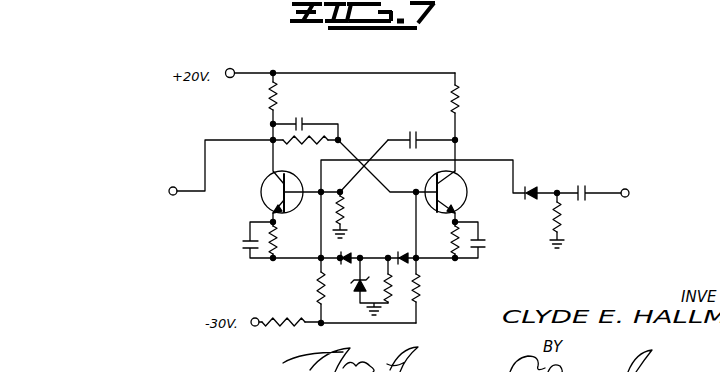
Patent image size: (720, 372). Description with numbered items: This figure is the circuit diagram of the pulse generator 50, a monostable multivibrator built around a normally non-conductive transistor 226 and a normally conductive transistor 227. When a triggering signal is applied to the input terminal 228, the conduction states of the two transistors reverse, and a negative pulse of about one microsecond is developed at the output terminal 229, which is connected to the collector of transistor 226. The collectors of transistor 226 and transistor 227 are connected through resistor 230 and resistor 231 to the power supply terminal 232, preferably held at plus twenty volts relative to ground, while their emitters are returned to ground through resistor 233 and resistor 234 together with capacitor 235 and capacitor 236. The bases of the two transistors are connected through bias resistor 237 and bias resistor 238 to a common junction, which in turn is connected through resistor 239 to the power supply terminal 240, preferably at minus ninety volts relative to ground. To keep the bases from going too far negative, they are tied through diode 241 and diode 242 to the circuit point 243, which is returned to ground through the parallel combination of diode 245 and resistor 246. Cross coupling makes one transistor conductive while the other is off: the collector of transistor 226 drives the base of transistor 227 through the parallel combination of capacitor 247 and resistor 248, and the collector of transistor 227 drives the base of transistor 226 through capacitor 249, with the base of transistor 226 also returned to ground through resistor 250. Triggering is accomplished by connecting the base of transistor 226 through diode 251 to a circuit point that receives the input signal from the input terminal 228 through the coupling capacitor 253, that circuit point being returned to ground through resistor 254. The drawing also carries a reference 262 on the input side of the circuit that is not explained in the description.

The pulse generator 50 is at (492, 128).
The normally non-conductive transistor 226 is at (261, 198).
The normally conductive transistor 227 is at (468, 191).
The input terminal 228 is at (630, 194).
The output terminal 229 is at (173, 186).
The resistor 230 is at (279, 96).
The resistor 231 is at (461, 104).
The power supply terminal 232 is at (236, 69).
The resistor 233 is at (278, 244).
The resistor 234 is at (452, 238).
The capacitor 235 is at (247, 240).
The capacitor 236 is at (483, 242).
The bias resistor 237 is at (318, 292).
The bias resistor 238 is at (421, 294).
The resistor 239 is at (288, 326).
The power supply terminal 240 is at (256, 317).
The diode 241 is at (347, 254).
The diode 242 is at (405, 255).
The circuit point 243 is at (365, 256).
The diode 245 is at (360, 299).
The resistor 246 is at (392, 292).
The capacitor 247 is at (305, 122).
The resistor 248 is at (280, 150).
The capacitor 249 is at (430, 122).
The resistor 250 is at (343, 206).
The diode 251 is at (530, 187).
The coupling capacitor 253 is at (592, 190).
The resistor 254 is at (562, 226).
The capacitor 262 is at (559, 192).